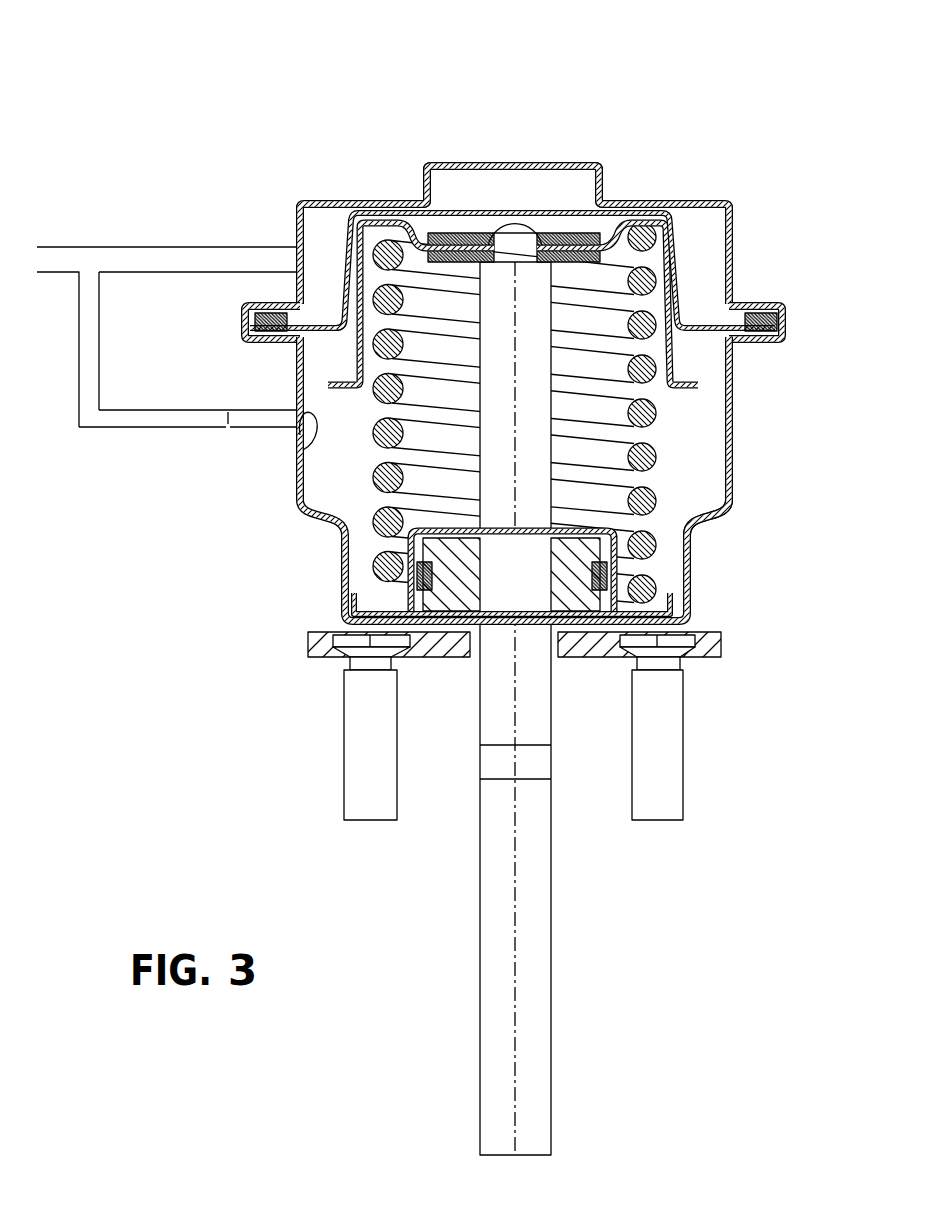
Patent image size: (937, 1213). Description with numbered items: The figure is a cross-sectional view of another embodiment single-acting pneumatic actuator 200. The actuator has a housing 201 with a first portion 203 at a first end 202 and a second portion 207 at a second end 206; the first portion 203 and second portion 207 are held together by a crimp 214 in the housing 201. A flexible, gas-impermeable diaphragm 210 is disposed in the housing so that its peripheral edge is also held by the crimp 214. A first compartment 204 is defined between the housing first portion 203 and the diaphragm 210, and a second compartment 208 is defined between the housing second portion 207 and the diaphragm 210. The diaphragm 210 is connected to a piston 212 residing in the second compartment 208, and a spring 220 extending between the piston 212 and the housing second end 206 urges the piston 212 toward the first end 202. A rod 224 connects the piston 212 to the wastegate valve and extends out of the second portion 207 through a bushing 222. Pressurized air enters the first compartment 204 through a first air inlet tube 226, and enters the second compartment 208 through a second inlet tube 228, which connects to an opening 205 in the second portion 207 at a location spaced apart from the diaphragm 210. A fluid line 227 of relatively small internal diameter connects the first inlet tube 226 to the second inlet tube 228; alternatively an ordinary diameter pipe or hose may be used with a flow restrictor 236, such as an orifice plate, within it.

The single-acting pneumatic actuator 200 is at (664, 94).
The housing 201 is at (506, 368).
The first end 202 is at (667, 203).
The first portion 203 is at (737, 265).
The first compartment 204 is at (703, 223).
The opening 205 is at (304, 440).
The second end 206 is at (688, 633).
The second portion 207 is at (735, 367).
The second compartment 208 is at (683, 497).
The diaphragm 210 is at (473, 206).
The piston 212 is at (555, 241).
The crimp 214 is at (247, 313).
The spring 220 is at (645, 453).
The bushing 222 is at (580, 592).
The rod 224 is at (540, 856).
The first air inlet tube 226 is at (152, 246).
The fluid line 227 is at (78, 342).
The second inlet tube 228 is at (140, 428).
The flow restrictor 236 is at (228, 430).